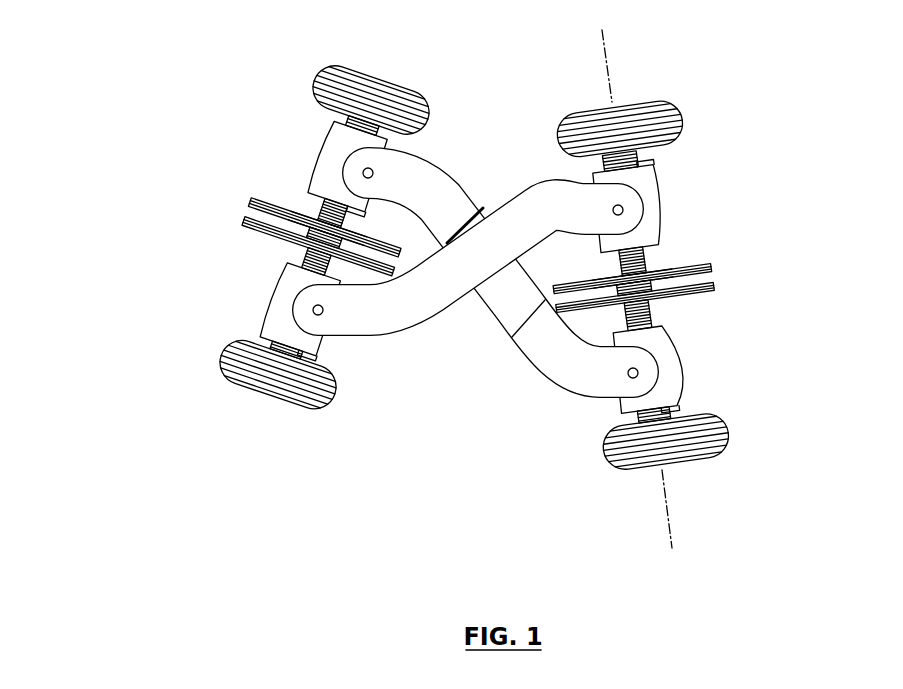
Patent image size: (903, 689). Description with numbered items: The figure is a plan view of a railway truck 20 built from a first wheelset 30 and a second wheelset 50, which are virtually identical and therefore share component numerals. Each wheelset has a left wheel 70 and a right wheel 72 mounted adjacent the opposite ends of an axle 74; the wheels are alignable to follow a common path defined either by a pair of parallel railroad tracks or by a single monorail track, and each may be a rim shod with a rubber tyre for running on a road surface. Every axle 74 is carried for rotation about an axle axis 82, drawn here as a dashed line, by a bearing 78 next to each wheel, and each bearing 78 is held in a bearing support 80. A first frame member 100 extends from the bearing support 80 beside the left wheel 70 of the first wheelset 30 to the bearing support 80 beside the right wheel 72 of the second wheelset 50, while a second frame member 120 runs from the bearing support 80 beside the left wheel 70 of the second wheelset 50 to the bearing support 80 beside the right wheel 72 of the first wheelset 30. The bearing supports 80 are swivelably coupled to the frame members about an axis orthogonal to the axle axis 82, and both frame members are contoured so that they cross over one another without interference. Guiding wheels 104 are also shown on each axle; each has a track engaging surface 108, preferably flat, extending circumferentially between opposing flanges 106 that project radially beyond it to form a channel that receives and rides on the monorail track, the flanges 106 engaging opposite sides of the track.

The railway truck 20 is at (326, 561).
The first wheelset 30 is at (788, 161).
The second wheelset 50 is at (266, 149).
The left wheel 70 is at (334, 403).
The right wheel 72 is at (421, 92).
The axle 74 is at (300, 255).
The bearing 78 is at (352, 213).
The bearing support 80 is at (326, 145).
The axle axis 82 is at (608, 96).
The first frame member 100 is at (543, 194).
The guiding wheel 104 is at (255, 201).
The flange 106 is at (276, 204).
The track engaging surface 108 is at (242, 221).
The second frame member 120 is at (500, 320).